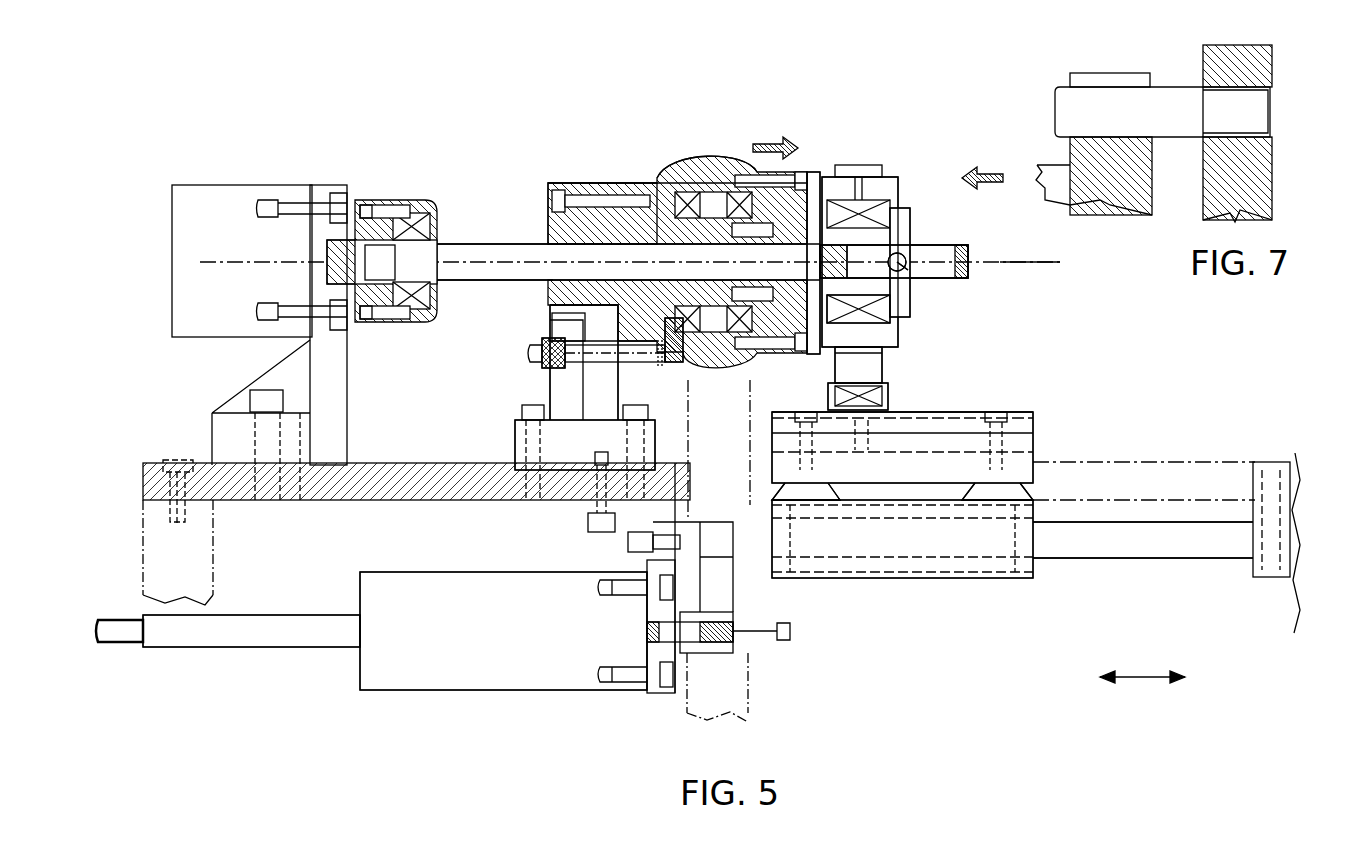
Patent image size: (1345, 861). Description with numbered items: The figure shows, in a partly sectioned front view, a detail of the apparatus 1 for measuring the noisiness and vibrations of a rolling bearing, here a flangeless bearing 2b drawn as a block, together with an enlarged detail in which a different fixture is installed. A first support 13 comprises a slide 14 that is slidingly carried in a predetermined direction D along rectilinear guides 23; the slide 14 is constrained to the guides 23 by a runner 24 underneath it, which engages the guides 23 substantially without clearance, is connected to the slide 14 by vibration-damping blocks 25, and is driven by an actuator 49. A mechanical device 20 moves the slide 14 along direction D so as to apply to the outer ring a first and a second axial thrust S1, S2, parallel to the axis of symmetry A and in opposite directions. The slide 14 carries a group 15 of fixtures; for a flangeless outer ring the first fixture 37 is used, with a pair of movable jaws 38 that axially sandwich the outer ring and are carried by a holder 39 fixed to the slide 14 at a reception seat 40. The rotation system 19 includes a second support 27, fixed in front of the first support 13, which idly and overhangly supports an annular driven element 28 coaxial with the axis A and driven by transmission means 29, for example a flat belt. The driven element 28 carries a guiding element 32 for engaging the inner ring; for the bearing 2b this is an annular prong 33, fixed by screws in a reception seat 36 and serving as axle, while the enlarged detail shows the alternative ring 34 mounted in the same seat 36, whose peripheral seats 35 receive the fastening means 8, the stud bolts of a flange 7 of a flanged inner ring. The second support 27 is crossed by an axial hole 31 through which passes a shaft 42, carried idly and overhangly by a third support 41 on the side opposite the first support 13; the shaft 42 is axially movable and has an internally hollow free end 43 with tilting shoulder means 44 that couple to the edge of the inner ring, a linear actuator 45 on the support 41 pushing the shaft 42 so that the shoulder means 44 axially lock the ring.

In FIG. 5, the apparatus 1 is at (925, 672).
In FIG. 5, the bearing 2b is at (905, 222).
In FIG. 7, the flange 7 is at (1272, 68).
In FIG. 7, the fastening means 8 is at (1175, 96).
In FIG. 5, the first support 13 is at (990, 376).
In FIG. 5, the slide 14 is at (1035, 418).
In FIG. 5, the group of fixtures 15 is at (860, 162).
In FIG. 5, the rotation system 19 is at (668, 185).
In FIG. 5, the mechanical device 20 is at (560, 690).
In FIG. 5, the rectilinear guides 23 is at (1157, 545).
In FIG. 5, the runner 24 is at (910, 545).
In FIG. 5, the blocks 25 is at (780, 490).
In FIG. 5, the second support 27 is at (633, 202).
In FIG. 5, the annular driven element 28 is at (735, 160).
In FIG. 5, the means for transmitting the motion 29 is at (680, 415).
In FIG. 5, the axial hole 31 is at (565, 310).
In FIG. 5, the guiding element 32 is at (802, 330).
In FIG. 7, the guiding element 32 is at (1053, 65).
In FIG. 5, the annular prong 33 is at (905, 296).
In FIG. 7, the ring 34 is at (1143, 178).
In FIG. 7, the seats 35 is at (1112, 80).
In FIG. 5, the reception seat 36 is at (812, 320).
In FIG. 5, the first fixture 37 is at (943, 222).
In FIG. 5, the movable jaws 38 is at (835, 186).
In FIG. 5, the holder 39 is at (865, 366).
In FIG. 5, the reception seat 40 is at (880, 397).
In FIG. 5, the third support 41 is at (340, 385).
In FIG. 5, the shaft 42 is at (493, 248).
In FIG. 5, the free end 43 is at (945, 273).
In FIG. 5, the tilting shoulder means 44 is at (910, 300).
In FIG. 5, the linear actuator 45 is at (222, 190).
In FIG. 5, the actuator 49 is at (405, 668).
In FIG. 5, the axis of symmetry A is at (1060, 266).
In FIG. 5, the predetermined direction D is at (1140, 680).
In FIG. 5, the first axial thrust S1 is at (990, 166).
In FIG. 5, the second axial thrust S2 is at (767, 138).